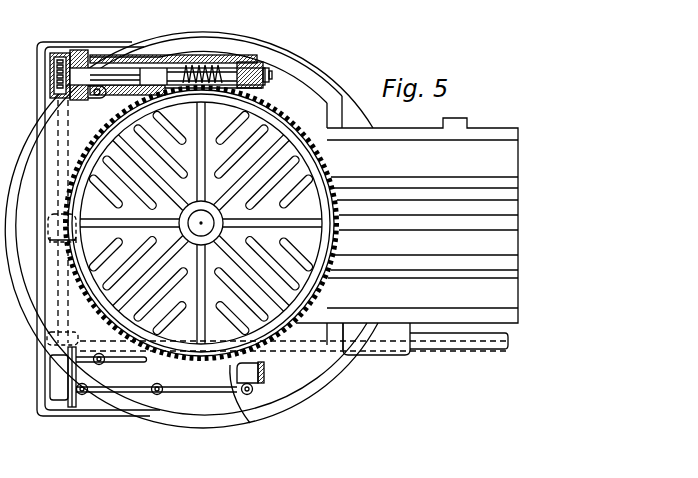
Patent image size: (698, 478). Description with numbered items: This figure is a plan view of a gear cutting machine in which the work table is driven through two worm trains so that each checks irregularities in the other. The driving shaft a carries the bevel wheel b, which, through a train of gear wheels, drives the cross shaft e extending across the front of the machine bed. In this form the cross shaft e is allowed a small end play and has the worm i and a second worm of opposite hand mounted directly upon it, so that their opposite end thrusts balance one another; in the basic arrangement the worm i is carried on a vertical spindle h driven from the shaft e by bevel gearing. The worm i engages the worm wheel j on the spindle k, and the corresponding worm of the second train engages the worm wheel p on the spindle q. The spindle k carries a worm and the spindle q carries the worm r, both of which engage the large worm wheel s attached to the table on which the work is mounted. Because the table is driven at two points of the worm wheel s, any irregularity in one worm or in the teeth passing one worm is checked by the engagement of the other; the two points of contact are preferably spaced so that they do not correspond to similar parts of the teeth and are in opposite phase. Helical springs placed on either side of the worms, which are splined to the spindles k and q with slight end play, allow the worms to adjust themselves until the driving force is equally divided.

The vertical spindle h is at (213, 246).
The worm i is at (213, 86).
The worm wheel j is at (54, 68).
The spindle k is at (115, 72).
The worm wheel s is at (225, 72).
The shaft e is at (63, 275).
The bevel wheel b is at (78, 337).
The worm wheel p is at (62, 398).
The spindle q is at (265, 373).
The worm r is at (249, 409).
The driving shaft a is at (395, 347).